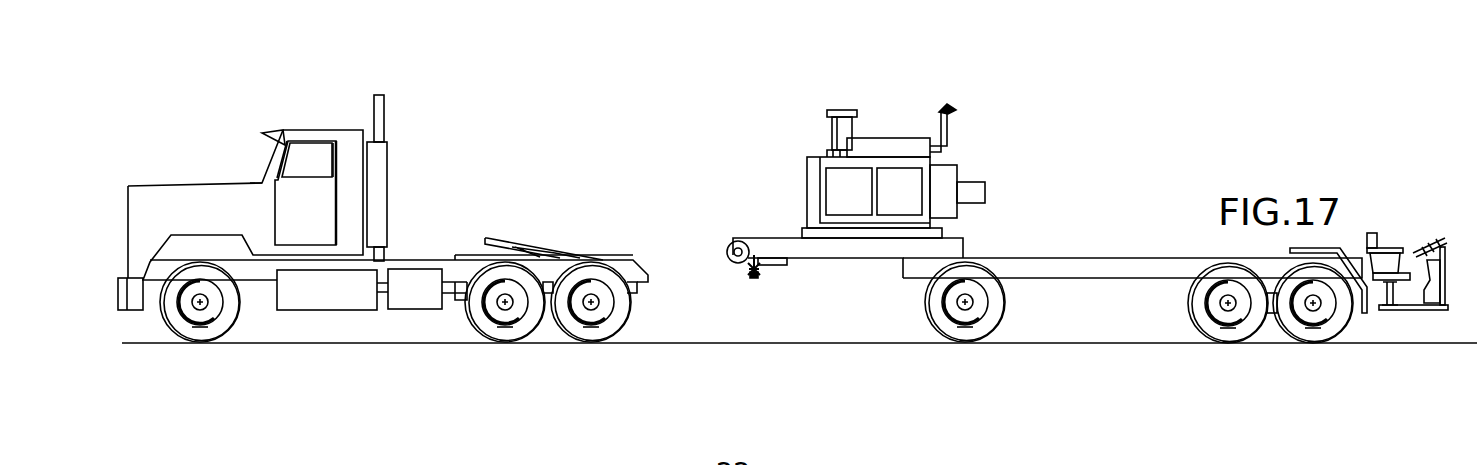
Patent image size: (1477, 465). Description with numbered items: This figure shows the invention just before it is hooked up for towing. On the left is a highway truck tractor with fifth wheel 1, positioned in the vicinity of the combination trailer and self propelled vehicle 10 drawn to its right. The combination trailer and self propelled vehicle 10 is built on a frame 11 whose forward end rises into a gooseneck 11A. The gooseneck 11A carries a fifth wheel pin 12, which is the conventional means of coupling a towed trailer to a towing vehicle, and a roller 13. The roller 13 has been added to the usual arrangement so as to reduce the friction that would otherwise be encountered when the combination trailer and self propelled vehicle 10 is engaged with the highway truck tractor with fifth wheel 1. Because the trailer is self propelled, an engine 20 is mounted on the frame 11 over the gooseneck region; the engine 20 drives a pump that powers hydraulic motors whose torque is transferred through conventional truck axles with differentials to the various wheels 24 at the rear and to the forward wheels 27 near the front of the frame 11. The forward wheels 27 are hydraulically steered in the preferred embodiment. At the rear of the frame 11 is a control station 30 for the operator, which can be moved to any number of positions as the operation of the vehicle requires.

The highway truck tractor with fifth wheel 1 is at (381, 183).
The combination trailer and self propelled vehicle 10 is at (1092, 267).
The frame 11 is at (1155, 270).
The gooseneck 11A is at (855, 250).
The fifth wheel pin 12 is at (757, 280).
The roller 13 is at (740, 241).
The engine 20 is at (913, 147).
The wheels 24 is at (1228, 344).
The forward wheels 27 is at (965, 341).
The control station 30 is at (1428, 308).